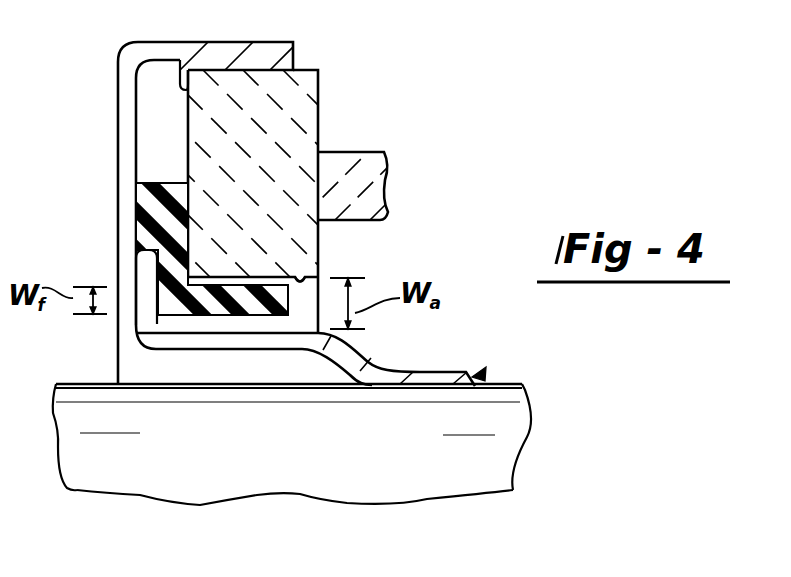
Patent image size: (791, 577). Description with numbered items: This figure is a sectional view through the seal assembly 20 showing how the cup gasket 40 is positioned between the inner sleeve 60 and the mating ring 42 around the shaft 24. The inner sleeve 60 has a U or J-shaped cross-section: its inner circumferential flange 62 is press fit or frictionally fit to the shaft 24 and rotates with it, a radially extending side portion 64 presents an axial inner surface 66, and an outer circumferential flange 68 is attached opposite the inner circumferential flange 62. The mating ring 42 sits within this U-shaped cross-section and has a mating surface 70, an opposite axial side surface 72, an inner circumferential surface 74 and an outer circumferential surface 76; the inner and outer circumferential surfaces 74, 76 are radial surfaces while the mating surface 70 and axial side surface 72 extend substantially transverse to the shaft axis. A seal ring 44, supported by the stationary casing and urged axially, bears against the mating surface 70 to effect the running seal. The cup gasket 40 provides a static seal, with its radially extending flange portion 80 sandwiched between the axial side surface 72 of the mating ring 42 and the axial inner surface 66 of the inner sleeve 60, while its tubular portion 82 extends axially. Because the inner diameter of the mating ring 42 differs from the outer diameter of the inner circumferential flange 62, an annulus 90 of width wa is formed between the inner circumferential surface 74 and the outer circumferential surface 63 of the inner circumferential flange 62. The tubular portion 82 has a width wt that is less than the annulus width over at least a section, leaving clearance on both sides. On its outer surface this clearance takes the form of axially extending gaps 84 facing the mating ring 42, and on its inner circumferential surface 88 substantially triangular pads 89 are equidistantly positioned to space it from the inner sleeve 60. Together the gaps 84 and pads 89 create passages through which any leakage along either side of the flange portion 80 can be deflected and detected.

The seal assembly 20 is at (460, 238).
The shaft 24 is at (223, 477).
The cup gasket 40 is at (172, 185).
The mating ring 42 is at (312, 103).
The seal ring 44 is at (378, 152).
The inner sleeve 60 is at (476, 376).
The inner circumferential flange 62 is at (228, 342).
The outer circumferential surface of the inner circumferential flange 63 is at (192, 337).
The radially extending side portion 64 is at (124, 190).
The axial inner surface 66 is at (142, 58).
The outer circumferential flange 68 is at (232, 50).
The mating surface 70 is at (318, 128).
The axial side surface 72 is at (182, 62).
The inner circumferential surface 74 is at (312, 268).
The outer circumferential surface 76 is at (311, 70).
The flange portion 80 is at (150, 188).
The tubular portion 82 is at (136, 324).
The gaps 84 is at (180, 262).
The inner circumferential surface of the tubular portion 88 is at (293, 322).
The pads 89 is at (185, 348).
The annulus 90 is at (313, 340).